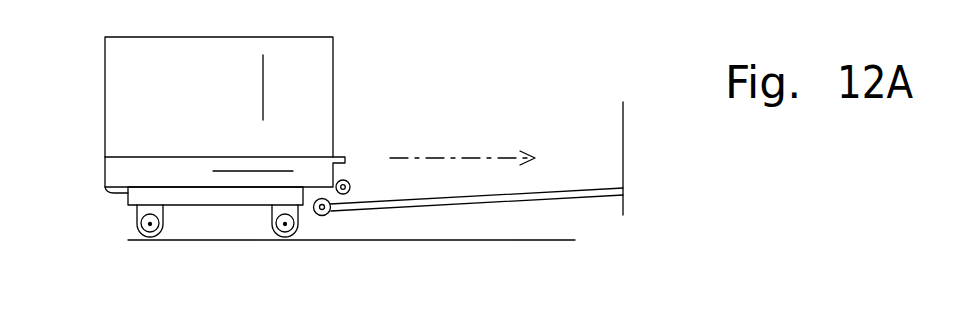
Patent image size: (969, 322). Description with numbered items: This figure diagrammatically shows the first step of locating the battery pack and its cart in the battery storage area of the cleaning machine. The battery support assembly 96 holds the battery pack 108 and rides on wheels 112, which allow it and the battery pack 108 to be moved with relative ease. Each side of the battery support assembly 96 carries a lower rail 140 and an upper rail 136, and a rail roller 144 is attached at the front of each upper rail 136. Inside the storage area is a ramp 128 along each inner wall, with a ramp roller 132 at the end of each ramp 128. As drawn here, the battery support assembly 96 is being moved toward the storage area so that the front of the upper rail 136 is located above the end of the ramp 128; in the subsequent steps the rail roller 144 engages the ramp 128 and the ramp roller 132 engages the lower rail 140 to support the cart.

The battery support assembly 96 is at (222, 161).
The battery pack 108 is at (334, 62).
The wheels 112 is at (152, 241).
The ramp 128 is at (489, 202).
The ramp roller 132 is at (328, 215).
The upper rail 136 is at (201, 189).
The lower rail 140 is at (108, 193).
The rail roller 144 is at (350, 186).